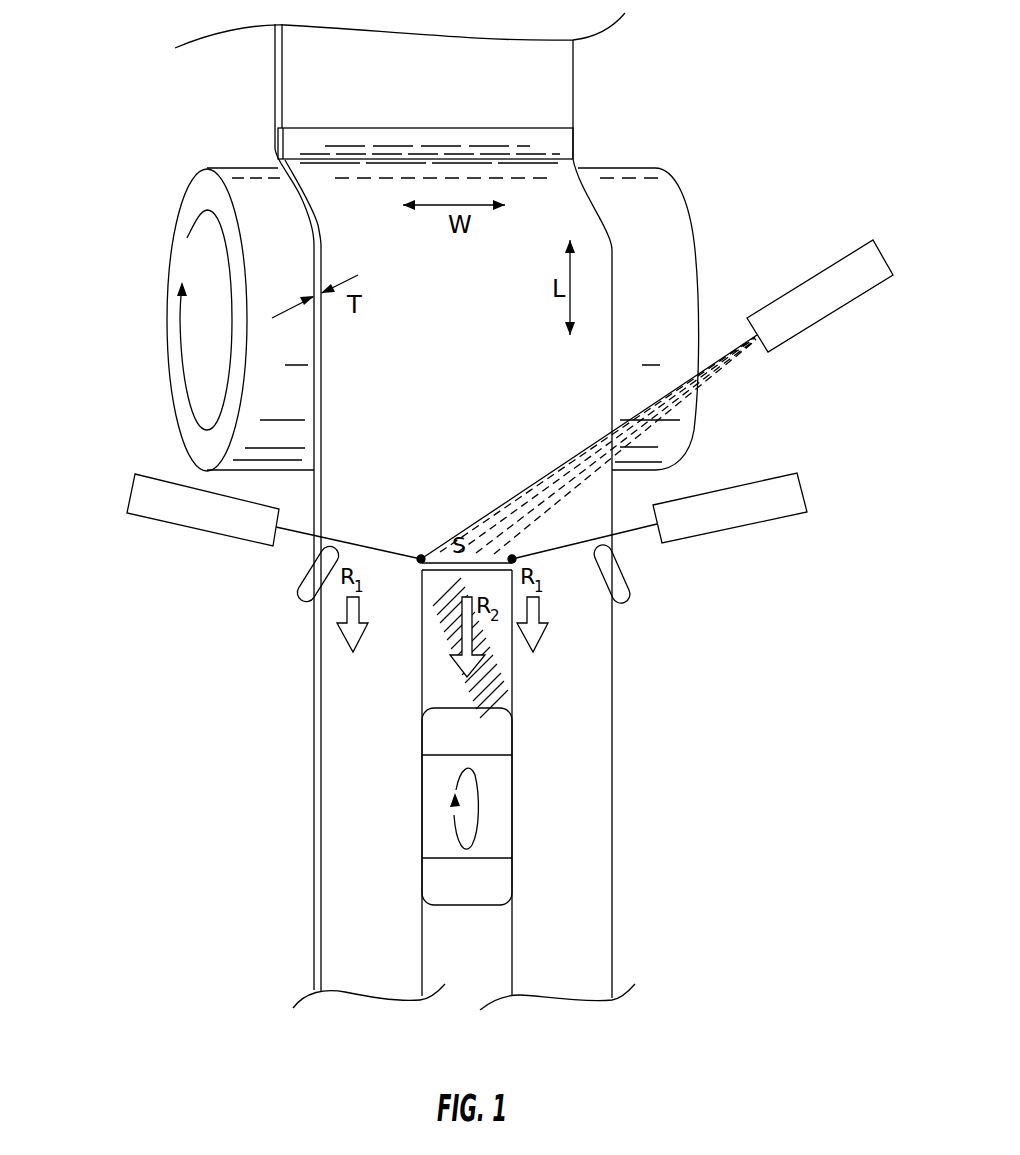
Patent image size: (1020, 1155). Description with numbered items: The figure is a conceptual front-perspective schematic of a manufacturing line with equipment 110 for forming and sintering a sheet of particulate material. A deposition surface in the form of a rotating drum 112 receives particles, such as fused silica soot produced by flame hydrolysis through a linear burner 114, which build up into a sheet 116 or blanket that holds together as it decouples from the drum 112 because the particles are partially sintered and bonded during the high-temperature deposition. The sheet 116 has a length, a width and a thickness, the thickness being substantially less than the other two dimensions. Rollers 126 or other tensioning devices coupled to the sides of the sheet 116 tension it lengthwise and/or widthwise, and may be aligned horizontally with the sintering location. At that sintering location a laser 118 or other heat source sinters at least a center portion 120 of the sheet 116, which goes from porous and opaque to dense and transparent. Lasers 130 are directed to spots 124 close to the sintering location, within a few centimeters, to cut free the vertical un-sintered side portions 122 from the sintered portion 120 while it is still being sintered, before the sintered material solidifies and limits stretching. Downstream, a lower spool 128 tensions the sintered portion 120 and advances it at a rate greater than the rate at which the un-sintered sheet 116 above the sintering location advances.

The equipment 110 is at (108, 196).
The rotating drum 112 is at (639, 184).
The linear burner 114 is at (453, 96).
The sheet 116 is at (486, 387).
The laser 118 is at (825, 280).
The sintered portion 120 is at (400, 655).
The un-sintered side portions 122 is at (337, 767).
The spots 124 is at (512, 557).
The rollers 126 is at (301, 594).
The lower spool 128 is at (500, 803).
The lasers 130 is at (198, 522).